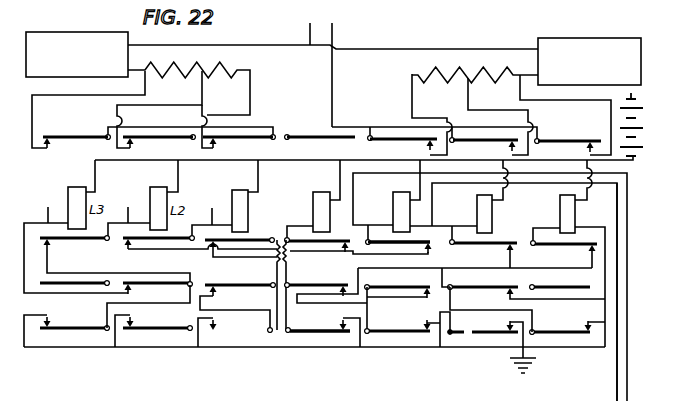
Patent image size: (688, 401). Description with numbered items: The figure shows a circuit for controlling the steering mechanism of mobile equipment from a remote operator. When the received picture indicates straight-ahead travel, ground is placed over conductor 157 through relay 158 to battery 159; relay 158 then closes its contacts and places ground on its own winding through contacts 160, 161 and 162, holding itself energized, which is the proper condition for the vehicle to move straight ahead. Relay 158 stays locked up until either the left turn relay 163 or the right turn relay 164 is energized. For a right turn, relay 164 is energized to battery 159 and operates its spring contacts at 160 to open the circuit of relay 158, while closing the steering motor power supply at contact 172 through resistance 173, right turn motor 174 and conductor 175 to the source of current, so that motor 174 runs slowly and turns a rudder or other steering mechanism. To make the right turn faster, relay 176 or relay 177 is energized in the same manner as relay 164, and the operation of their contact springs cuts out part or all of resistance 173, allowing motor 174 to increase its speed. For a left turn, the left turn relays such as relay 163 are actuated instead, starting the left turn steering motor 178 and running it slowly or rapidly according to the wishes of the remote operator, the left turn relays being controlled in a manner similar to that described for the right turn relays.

The conductor 157 is at (612, 366).
The relay 158 is at (311, 201).
The battery 159 is at (640, 149).
The contacts 160 is at (432, 248).
The contacts 161 is at (252, 234).
The contacts 162 is at (340, 325).
The relay 163 is at (232, 203).
The relay 164 is at (393, 203).
The contact 172 is at (425, 144).
The resistance 173 is at (448, 84).
The right turn motor 174 is at (566, 37).
The conductor 175 is at (402, 50).
The relay 176 is at (496, 214).
The relay 177 is at (578, 222).
The left turn steering motor 178 is at (38, 31).